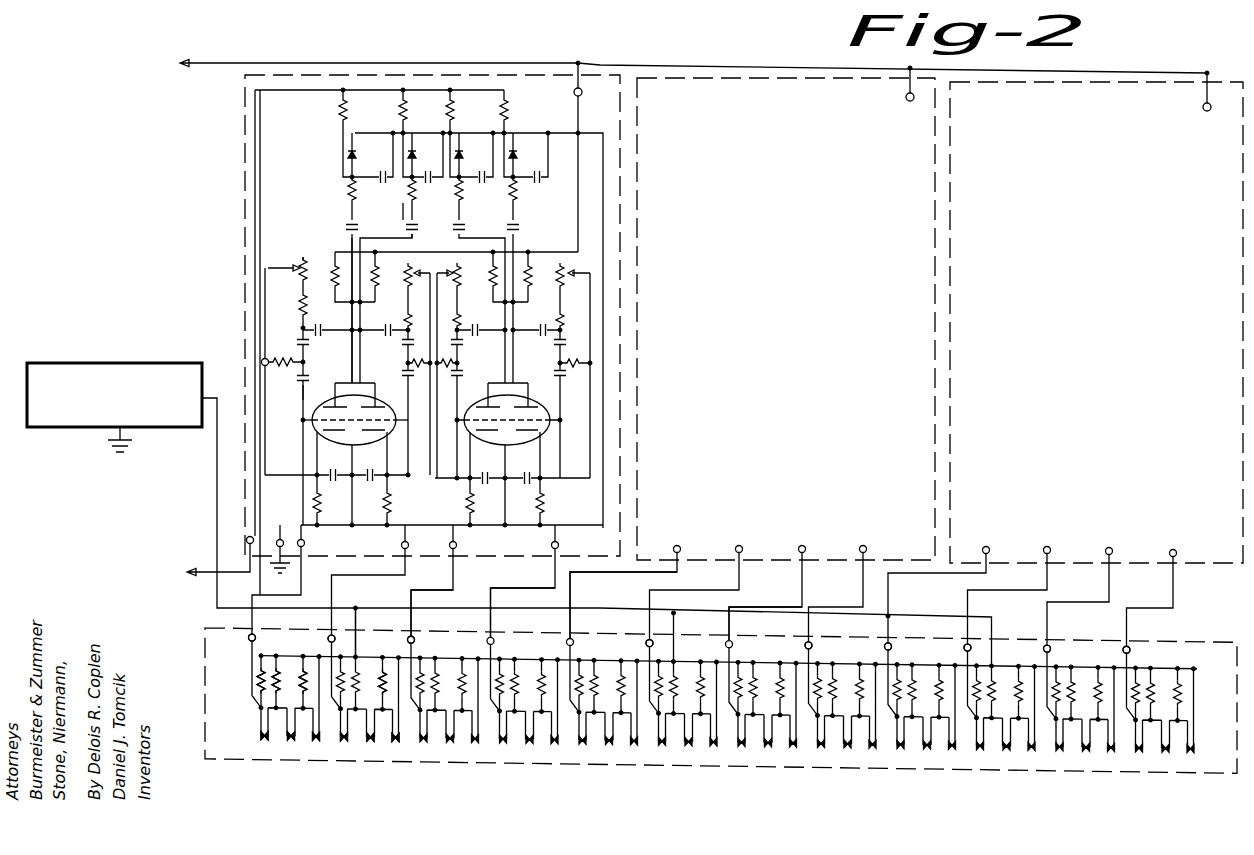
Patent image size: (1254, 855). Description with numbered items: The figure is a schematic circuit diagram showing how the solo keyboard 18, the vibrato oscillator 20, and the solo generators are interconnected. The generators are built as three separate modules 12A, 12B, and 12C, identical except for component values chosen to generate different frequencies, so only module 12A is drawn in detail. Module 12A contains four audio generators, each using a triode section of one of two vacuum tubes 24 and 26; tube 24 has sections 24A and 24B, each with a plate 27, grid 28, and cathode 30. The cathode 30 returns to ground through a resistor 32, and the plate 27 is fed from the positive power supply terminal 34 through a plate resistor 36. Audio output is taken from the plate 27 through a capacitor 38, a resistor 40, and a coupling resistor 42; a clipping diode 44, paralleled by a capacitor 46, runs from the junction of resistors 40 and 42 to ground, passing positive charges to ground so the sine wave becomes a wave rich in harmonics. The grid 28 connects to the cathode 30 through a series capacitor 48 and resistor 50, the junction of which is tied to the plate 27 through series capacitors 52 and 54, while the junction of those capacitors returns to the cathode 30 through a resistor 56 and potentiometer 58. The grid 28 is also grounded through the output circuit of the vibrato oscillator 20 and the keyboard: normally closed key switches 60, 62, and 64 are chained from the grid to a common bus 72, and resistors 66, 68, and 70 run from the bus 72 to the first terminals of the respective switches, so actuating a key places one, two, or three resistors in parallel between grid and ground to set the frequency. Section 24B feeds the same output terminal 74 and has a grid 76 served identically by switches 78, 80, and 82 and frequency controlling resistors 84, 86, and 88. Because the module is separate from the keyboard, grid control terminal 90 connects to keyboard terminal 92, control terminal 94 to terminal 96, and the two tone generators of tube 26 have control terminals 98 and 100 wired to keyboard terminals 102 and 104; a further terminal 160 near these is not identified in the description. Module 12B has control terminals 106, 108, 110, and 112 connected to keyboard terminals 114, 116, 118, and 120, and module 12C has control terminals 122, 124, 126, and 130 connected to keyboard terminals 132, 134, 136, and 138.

The solo keyboard 18 is at (721, 718).
The vibrato oscillator 20 is at (107, 362).
The vacuum tube 24 is at (331, 395).
The vacuum tube section 24A is at (318, 430).
The vacuum tube section 24B is at (366, 383).
The vacuum tube 26 is at (519, 394).
The plate 27 is at (303, 393).
The grid 28 is at (303, 420).
The cathode 30 is at (320, 447).
The resistor 32 is at (316, 500).
The positive terminal of power supply 34 is at (216, 62).
The plate resistor 36 is at (334, 266).
The capacitor 38 is at (348, 227).
The resistor 40 is at (349, 193).
The coupling resistor 42 is at (340, 110).
The clipping diode 44 is at (356, 151).
The capacitor 46 is at (384, 183).
The capacitor 48 is at (298, 378).
The resistor 50 is at (262, 360).
The capacitor 52 is at (300, 342).
The capacitor 54 is at (318, 333).
The resistor 56 is at (301, 302).
The potentiometer 58 is at (300, 262).
The key switch 60 is at (251, 756).
The key switch 62 is at (274, 762).
The key switch 64 is at (304, 758).
The resistor 66 is at (241, 676).
The resistor 68 is at (279, 660).
The resistor 70 is at (312, 660).
The common bus 72 is at (707, 659).
The output terminal 74 is at (246, 541).
The grid 76 is at (358, 474).
The switch 78 is at (330, 761).
The switch 80 is at (362, 756).
The switch 82 is at (383, 762).
The frequency controlling resistor 84 is at (357, 607).
The frequency controlling resistor 86 is at (386, 652).
The frequency controlling resistor 88 is at (399, 636).
The grid control terminal 90 is at (305, 543).
The terminal 92 is at (234, 636).
The control terminal 94 is at (401, 545).
The terminal 96 is at (317, 627).
The control terminal 98 is at (457, 545).
The control terminal 100 is at (552, 550).
The terminal 102 is at (418, 632).
The terminal 104 is at (496, 633).
The control terminal 106 is at (677, 545).
The control terminal 108 is at (739, 545).
The control terminal 110 is at (802, 545).
The control terminal 112 is at (863, 545).
The terminal 114 is at (574, 632).
The terminal 116 is at (626, 630).
The terminal 118 is at (730, 636).
The terminal 120 is at (784, 632).
The control terminal 122 is at (986, 546).
The control terminal 124 is at (1047, 546).
The control terminal 126 is at (1109, 547).
The control terminal 130 is at (1173, 549).
The terminal 132 is at (860, 633).
The terminal 134 is at (942, 633).
The terminal 136 is at (1073, 636).
The terminal 138 is at (1157, 636).
The ground terminal 160 is at (280, 538).
The solo generator module 12A is at (278, 163).
The solo generator module 12B is at (789, 98).
The solo generator module 12C is at (1117, 118).